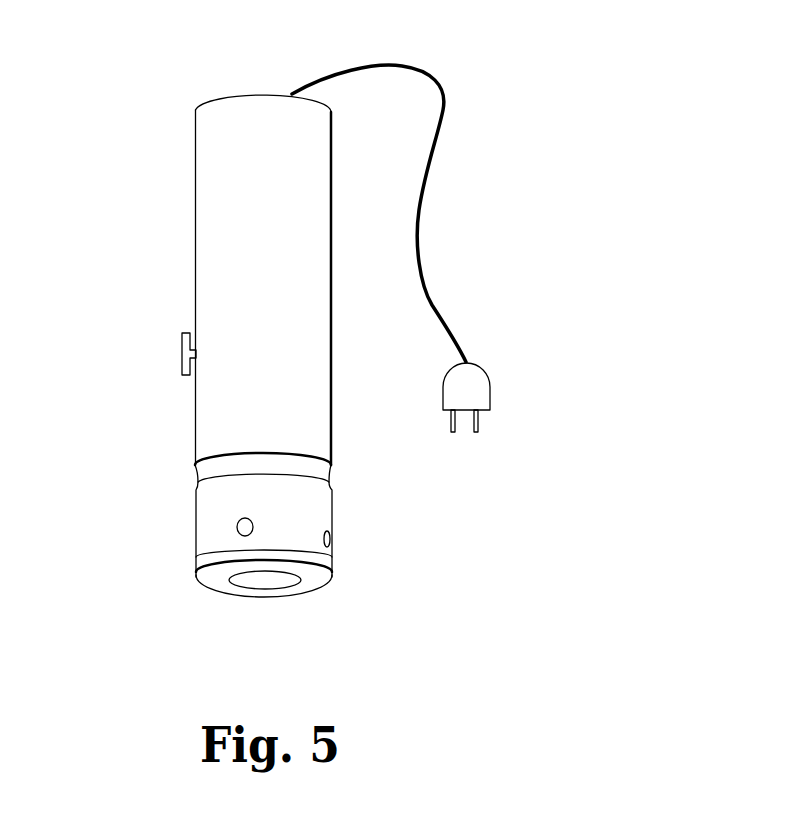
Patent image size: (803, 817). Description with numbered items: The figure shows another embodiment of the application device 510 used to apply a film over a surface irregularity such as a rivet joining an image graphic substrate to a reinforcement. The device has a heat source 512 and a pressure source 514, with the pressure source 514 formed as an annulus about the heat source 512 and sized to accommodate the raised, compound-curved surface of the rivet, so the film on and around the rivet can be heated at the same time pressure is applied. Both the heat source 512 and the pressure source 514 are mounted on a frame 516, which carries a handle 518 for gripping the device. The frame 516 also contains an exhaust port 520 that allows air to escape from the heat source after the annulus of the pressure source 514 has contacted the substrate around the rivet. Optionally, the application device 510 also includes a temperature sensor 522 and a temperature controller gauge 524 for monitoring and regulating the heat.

The application device 510 is at (141, 105).
The heat source 512 is at (268, 582).
The pressure source 514 is at (210, 578).
The frame 516 is at (213, 510).
The handle 518 is at (217, 253).
The exhaust port 520 is at (332, 539).
The temperature sensor 522 is at (238, 530).
The temperature controller gauge 524 is at (182, 343).